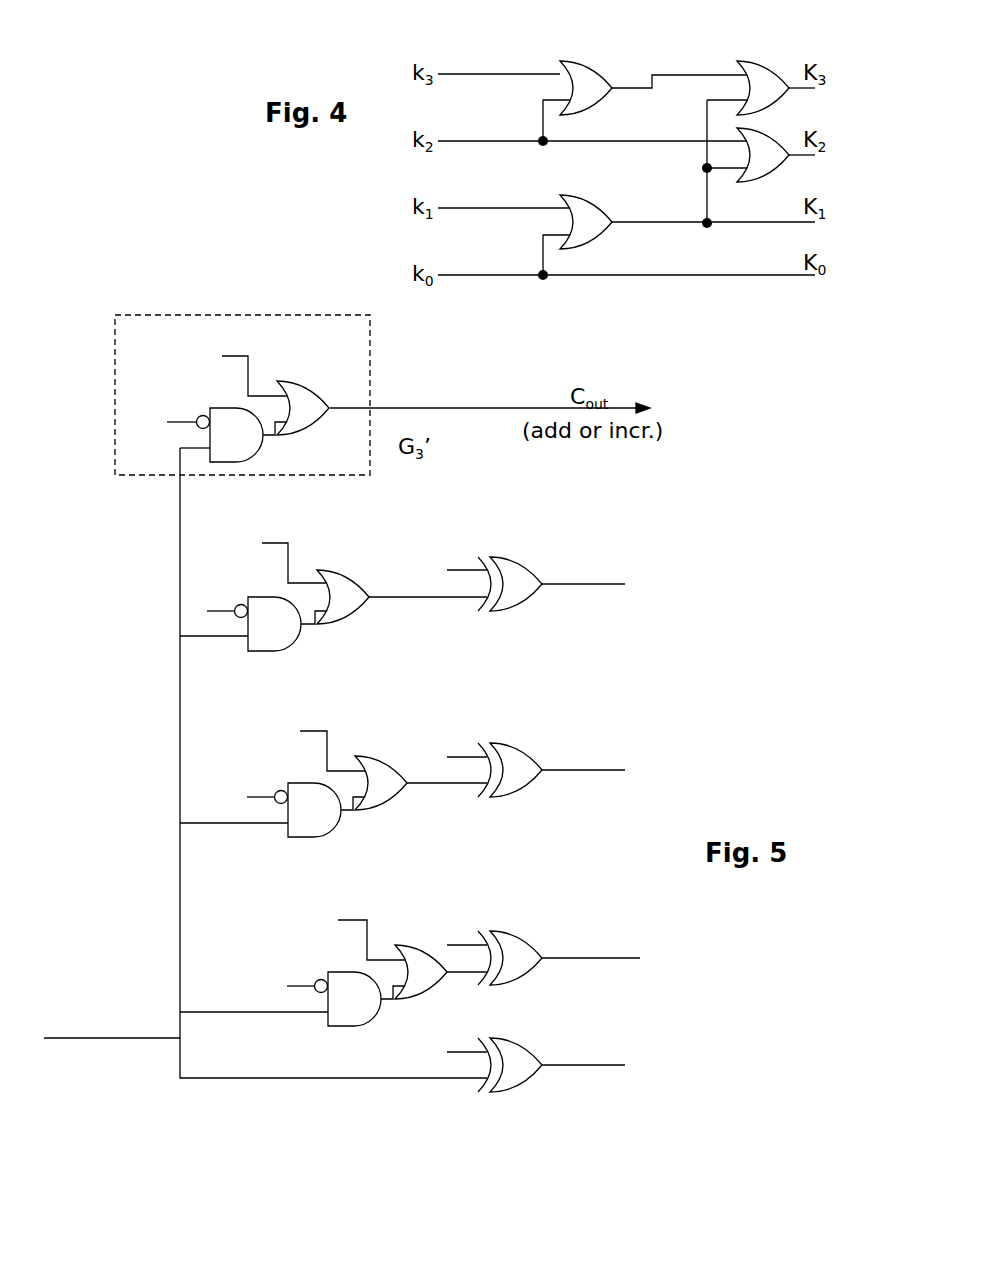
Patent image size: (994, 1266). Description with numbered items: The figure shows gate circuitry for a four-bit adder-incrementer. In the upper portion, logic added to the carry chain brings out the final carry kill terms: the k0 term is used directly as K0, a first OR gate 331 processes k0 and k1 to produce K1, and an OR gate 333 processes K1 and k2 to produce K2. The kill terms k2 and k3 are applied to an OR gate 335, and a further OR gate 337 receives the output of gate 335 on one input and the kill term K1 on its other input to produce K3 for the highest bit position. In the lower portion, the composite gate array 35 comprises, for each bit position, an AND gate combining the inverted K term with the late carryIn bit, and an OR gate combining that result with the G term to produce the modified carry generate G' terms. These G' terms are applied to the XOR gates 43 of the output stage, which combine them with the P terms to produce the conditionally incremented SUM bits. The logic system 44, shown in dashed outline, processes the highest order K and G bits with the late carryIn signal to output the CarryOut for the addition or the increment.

In FIG. 4, the first OR gate 331 is at (569, 195).
In FIG. 4, the OR gate 333 is at (748, 183).
In FIG. 4, the OR gate 335 is at (573, 60).
In FIG. 4, the further OR gate 337 is at (748, 60).
In FIG. 5, the logic system 44 is at (235, 313).
In FIG. 5, the composite gate array 35 is at (178, 1092).
In FIG. 5, the XOR gates 43 is at (633, 1106).